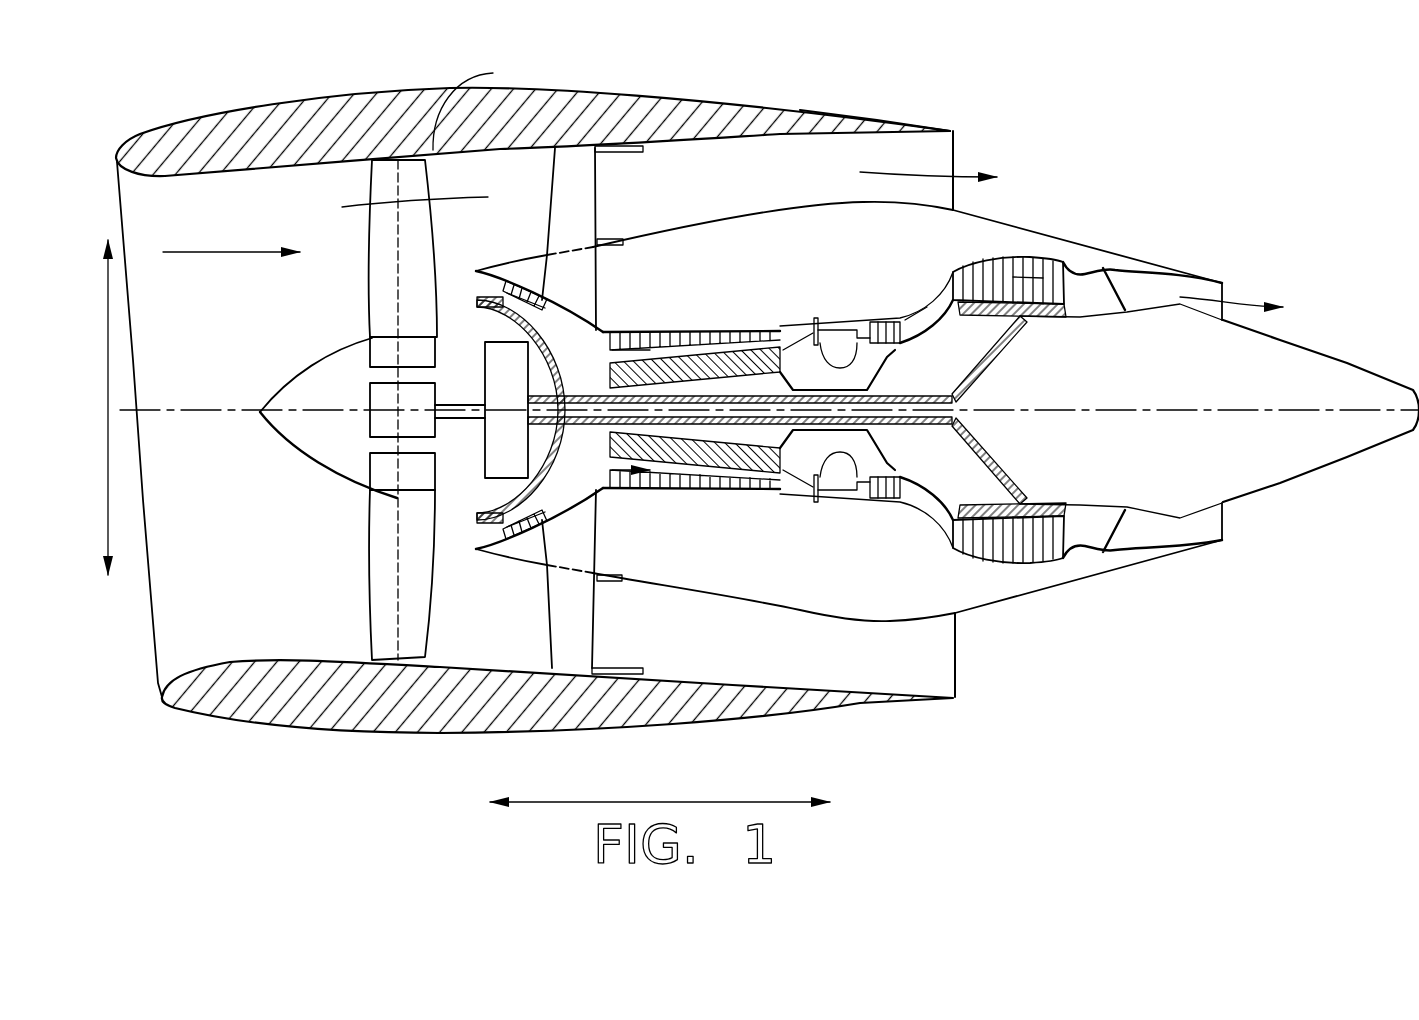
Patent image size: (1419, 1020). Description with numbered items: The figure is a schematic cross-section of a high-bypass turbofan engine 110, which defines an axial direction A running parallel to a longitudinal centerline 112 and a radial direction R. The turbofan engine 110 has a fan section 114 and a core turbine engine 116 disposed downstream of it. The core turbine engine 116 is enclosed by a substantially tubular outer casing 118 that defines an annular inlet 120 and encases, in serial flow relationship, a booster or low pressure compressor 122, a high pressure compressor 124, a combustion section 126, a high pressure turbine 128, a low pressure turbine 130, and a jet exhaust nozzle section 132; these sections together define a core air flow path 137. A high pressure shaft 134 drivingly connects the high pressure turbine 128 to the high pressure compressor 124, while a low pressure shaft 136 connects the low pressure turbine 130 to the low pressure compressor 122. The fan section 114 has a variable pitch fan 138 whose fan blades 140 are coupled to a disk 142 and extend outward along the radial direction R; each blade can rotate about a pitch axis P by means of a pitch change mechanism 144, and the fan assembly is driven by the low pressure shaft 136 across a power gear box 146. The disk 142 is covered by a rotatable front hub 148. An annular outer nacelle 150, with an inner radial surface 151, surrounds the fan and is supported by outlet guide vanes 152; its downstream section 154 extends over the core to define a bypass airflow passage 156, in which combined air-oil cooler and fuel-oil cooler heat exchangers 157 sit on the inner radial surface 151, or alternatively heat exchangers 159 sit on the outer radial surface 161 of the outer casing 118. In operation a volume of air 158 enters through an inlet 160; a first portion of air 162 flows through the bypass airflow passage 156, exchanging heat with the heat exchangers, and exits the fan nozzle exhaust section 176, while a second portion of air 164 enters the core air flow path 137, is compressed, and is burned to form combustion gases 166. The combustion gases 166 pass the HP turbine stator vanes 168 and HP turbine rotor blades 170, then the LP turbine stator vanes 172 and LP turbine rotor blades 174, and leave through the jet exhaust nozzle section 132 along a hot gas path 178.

The turbofan engine 110 is at (1125, 120).
The longitudinal centerline 112 is at (1155, 410).
The fan section 114 is at (273, 203).
The core turbine engine 116 is at (770, 300).
The outer casing 118 is at (785, 603).
The annular inlet 120 is at (483, 538).
The low pressure compressor 122 is at (535, 503).
The high pressure compressor 124 is at (633, 478).
The combustion section 126 is at (833, 487).
The high pressure turbine 128 is at (907, 495).
The low pressure turbine 130 is at (1052, 562).
The jet exhaust nozzle section 132 is at (1120, 540).
The high pressure shaft 134 is at (895, 368).
The low pressure shaft 136 is at (960, 385).
The core air flow path 137 is at (568, 520).
The variable pitch fan 138 is at (317, 468).
The fan blades 140 is at (370, 590).
The disk 142 is at (387, 350).
The pitch change mechanism 144 is at (368, 397).
The power gear box 146 is at (515, 355).
The rotatable front hub 148 is at (285, 430).
The outer nacelle 150 is at (420, 738).
The inner radial surface 151 is at (775, 112).
The outlet guide vanes 152 is at (597, 195).
The downstream section 154 is at (840, 113).
The bypass airflow passage 156 is at (752, 182).
The combined air-oil cooler and fuel-oil cooler heat exchangers 157 is at (618, 147).
The volume of air 158 is at (227, 253).
The combined air-oil cooler and fuel-oil cooler heat exchangers 159 is at (610, 247).
The inlet 160 is at (157, 672).
The outer radial surface 161 is at (763, 222).
The first portion of air 162 is at (390, 203).
The second portion of air 164 is at (463, 280).
The combustion gases 166 is at (1013, 273).
The HP turbine stator vanes 168 is at (853, 493).
The HP turbine rotor blades 170 is at (880, 472).
The LP turbine stator vanes 172 is at (963, 552).
The LP turbine rotor blades 174 is at (973, 558).
The fan nozzle exhaust section 176 is at (942, 150).
The hot gas path 178 is at (937, 277).
The pitch axis P is at (469, 106).
The radial direction R is at (118, 383).
The axial direction A is at (660, 802).